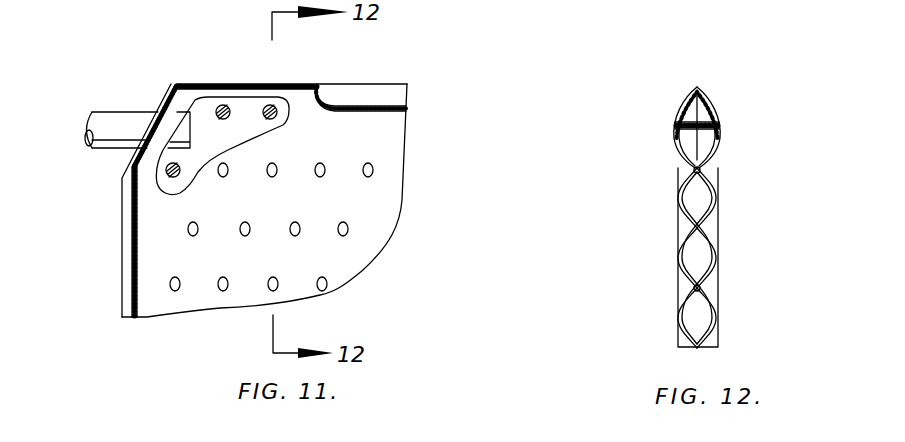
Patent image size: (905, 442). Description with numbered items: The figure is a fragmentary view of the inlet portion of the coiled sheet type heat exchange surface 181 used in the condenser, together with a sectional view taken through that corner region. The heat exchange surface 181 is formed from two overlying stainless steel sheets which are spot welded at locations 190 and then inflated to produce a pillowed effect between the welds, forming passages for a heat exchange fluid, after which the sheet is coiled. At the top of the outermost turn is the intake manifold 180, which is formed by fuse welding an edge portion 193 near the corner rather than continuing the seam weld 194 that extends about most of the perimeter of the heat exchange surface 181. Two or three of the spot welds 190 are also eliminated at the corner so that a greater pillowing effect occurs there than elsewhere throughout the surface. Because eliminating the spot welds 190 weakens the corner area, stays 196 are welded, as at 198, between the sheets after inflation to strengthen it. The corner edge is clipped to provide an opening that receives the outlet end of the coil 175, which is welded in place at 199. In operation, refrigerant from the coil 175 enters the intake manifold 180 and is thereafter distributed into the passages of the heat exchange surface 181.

In FIG. 11, the coil 175 is at (88, 120).
In FIG. 11, the intake manifold 180 is at (121, 161).
In FIG. 12, the intake manifold 180 is at (671, 110).
In FIG. 11, the coiled sheet type heat exchange surface 181 is at (172, 326).
In FIG. 12, the coiled sheet type heat exchange surface 181 is at (673, 308).
In FIG. 11, the spot welds 190 is at (341, 222).
In FIG. 12, the spot welds 190 is at (701, 171).
In FIG. 11, the edge portion 193 is at (288, 84).
In FIG. 12, the edge portion 193 is at (697, 87).
In FIG. 11, the seam weld 194 is at (366, 106).
In FIG. 11, the stays 196 is at (270, 104).
In FIG. 12, the stays 196 is at (720, 118).
In FIG. 12, the stay welds 198 is at (673, 127).
In FIG. 11, the coil weld 199 is at (163, 112).